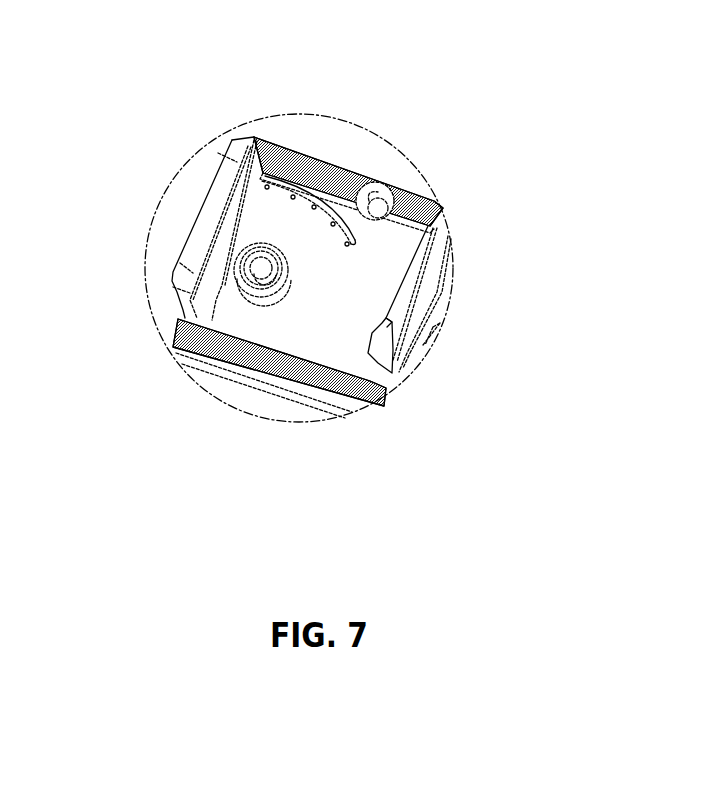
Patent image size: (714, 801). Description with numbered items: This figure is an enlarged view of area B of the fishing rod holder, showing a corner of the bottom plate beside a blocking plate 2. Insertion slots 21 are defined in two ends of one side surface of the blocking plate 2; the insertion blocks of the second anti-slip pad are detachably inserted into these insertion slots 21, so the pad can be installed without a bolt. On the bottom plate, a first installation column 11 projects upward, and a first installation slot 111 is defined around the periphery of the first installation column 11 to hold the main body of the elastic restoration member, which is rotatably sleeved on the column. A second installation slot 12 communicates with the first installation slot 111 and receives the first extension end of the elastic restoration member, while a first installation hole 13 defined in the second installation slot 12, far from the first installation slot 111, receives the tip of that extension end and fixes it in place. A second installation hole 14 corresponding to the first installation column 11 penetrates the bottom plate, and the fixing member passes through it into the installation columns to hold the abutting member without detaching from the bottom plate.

The area B is at (228, 128).
The blocking plate 2 is at (447, 233).
The insertion slots 21 is at (383, 338).
The first installation column 11 is at (248, 297).
The first installation slot 111 is at (275, 308).
The second installation slot 12 is at (298, 273).
The first installation hole 13 is at (307, 281).
The second installation hole 14 is at (253, 272).